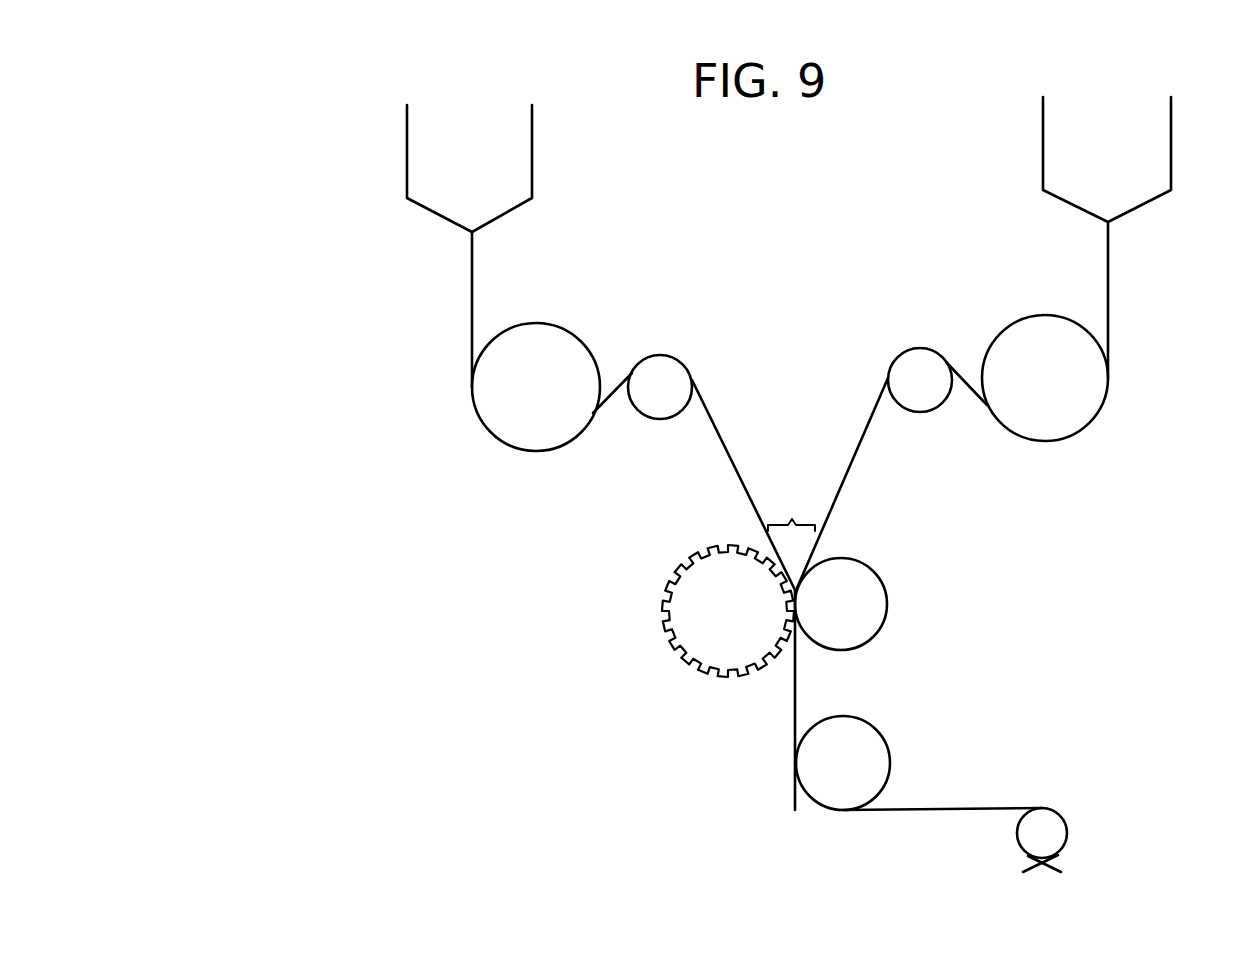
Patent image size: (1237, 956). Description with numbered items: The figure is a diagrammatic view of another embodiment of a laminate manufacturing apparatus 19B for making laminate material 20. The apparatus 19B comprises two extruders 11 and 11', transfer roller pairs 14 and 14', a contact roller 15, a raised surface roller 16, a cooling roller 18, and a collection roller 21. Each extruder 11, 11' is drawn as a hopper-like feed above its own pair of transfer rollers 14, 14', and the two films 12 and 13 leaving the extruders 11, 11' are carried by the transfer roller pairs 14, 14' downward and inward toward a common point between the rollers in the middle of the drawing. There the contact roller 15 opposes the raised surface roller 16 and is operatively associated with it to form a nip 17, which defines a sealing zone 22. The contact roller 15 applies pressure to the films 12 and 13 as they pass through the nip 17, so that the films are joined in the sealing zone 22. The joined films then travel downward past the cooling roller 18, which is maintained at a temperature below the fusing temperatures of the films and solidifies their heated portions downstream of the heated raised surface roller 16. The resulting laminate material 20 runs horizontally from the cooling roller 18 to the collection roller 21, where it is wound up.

The laminate manufacturing apparatus 19B is at (303, 263).
The extruder 11 is at (519, 168).
The extruder 11' is at (1058, 159).
The film 12 is at (472, 291).
The film 13 is at (1110, 282).
The transfer roller pair 14 is at (583, 352).
The transfer roller pair 14' is at (995, 348).
The contact roller 15 is at (873, 600).
The raised surface roller 16 is at (688, 614).
The nip 17 is at (799, 565).
The sealing zone 22 is at (791, 513).
The cooling roller 18 is at (865, 758).
The laminate material 20 is at (970, 795).
The collection roller 21 is at (1057, 828).